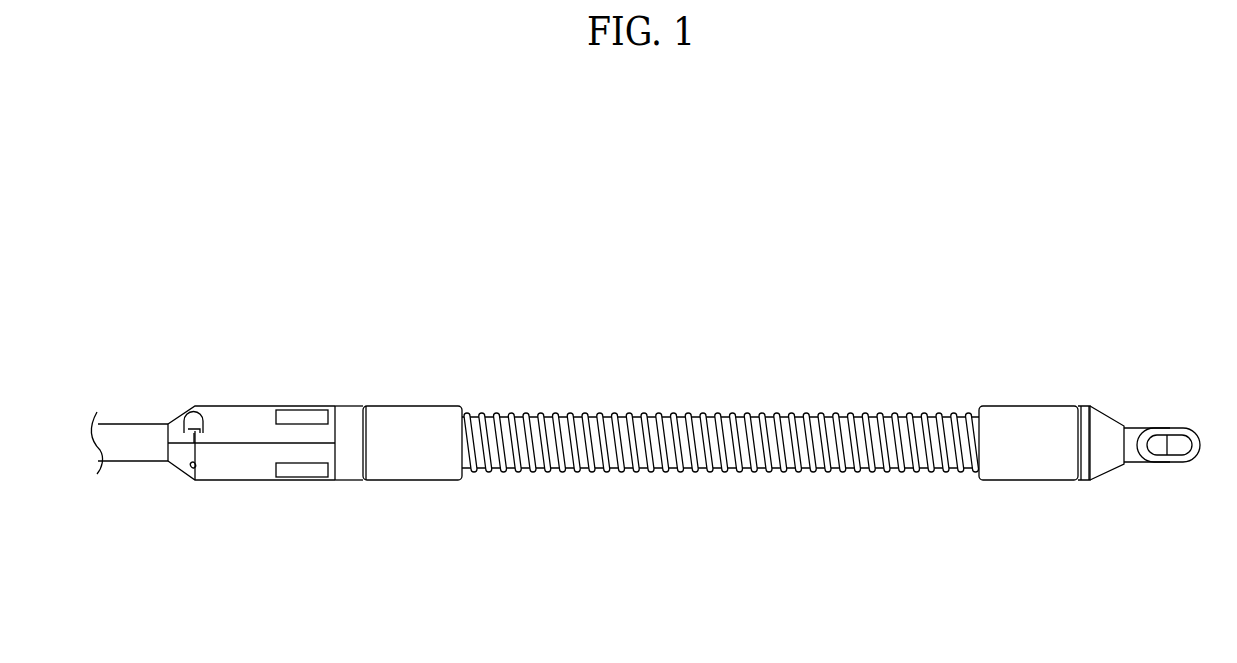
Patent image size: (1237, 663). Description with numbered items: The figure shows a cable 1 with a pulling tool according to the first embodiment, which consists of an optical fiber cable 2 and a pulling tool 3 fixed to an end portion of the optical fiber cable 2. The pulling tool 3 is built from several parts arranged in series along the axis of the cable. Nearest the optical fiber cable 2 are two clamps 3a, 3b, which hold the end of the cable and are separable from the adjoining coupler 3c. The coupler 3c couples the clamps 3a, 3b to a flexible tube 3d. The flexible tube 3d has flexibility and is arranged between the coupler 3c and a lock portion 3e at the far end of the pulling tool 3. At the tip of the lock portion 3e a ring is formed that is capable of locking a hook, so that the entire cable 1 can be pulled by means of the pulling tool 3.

The cable with a pulling tool 1 is at (75, 273).
The optical fiber cable 2 is at (142, 421).
The pulling tool 3 is at (228, 404).
The clamp 3a is at (254, 415).
The clamp 3b is at (246, 462).
The coupler 3c is at (405, 417).
The flexible tube 3d is at (665, 418).
The lock portion 3e is at (1102, 421).